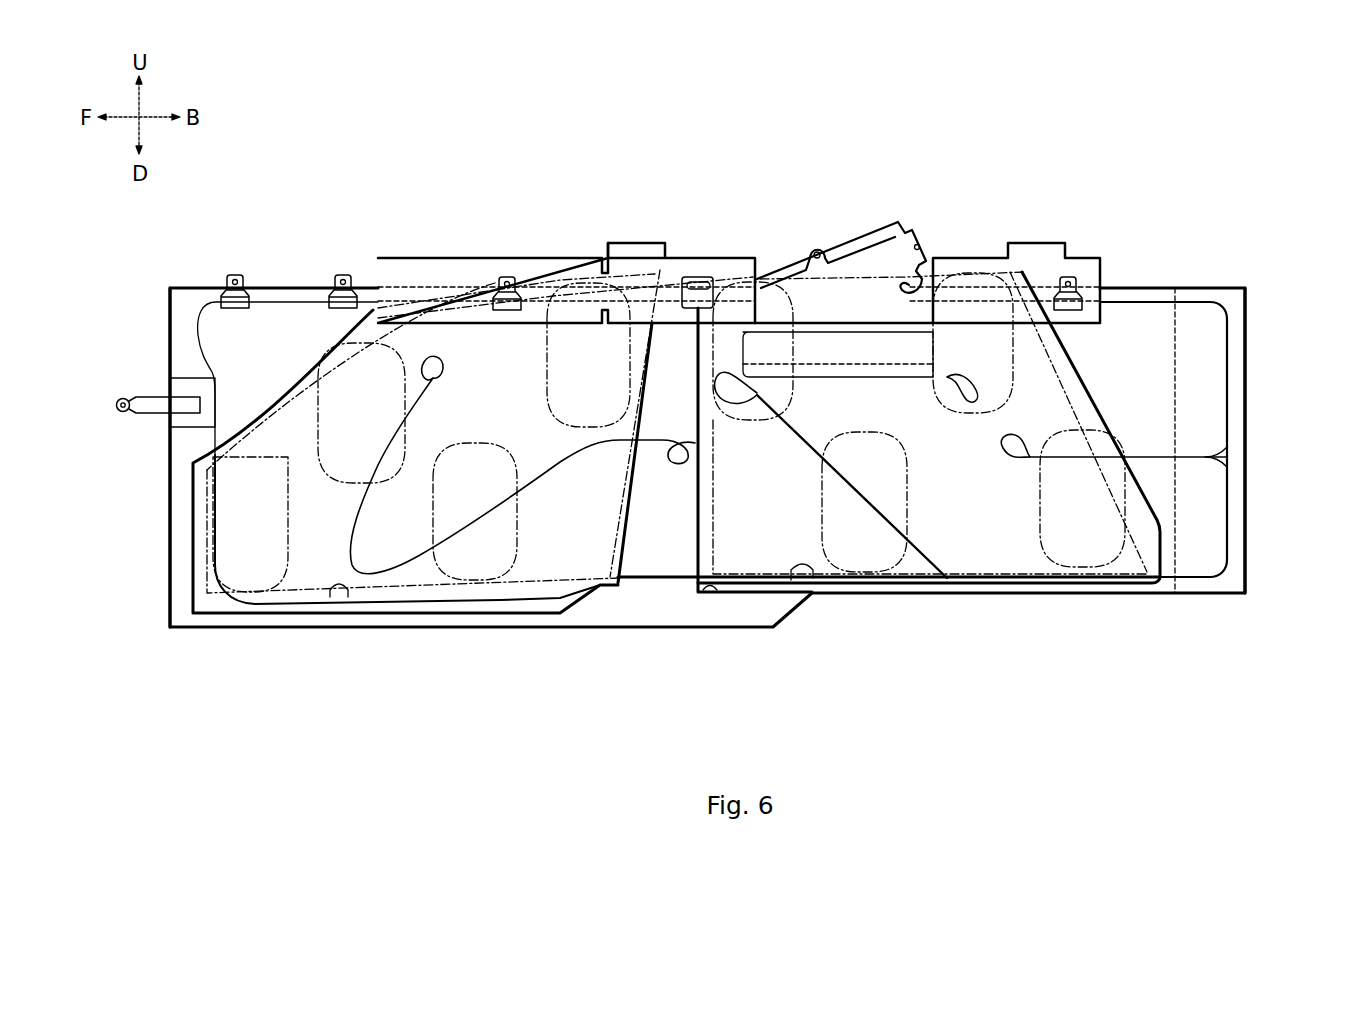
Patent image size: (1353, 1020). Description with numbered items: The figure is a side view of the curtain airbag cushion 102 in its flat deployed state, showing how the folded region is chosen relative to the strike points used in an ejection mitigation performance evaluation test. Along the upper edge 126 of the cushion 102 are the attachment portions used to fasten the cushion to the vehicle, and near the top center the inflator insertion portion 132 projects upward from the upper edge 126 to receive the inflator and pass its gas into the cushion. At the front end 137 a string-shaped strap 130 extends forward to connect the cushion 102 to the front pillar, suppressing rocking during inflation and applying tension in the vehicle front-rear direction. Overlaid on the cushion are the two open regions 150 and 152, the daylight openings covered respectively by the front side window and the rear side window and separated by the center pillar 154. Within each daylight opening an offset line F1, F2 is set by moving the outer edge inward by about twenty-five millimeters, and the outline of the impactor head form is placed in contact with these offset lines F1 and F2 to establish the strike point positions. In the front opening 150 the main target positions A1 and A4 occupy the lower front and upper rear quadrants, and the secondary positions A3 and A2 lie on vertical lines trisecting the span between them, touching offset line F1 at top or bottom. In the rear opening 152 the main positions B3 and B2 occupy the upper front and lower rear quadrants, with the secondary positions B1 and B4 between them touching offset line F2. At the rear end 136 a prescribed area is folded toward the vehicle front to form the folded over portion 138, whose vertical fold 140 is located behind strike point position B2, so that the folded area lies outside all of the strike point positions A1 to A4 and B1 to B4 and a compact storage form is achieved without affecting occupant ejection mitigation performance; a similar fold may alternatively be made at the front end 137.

The cushion 102 is at (310, 198).
The upper edge 126 is at (363, 287).
The strap 130 is at (160, 396).
The inflator insertion portion 132 is at (851, 238).
The rear end 136 is at (1246, 458).
The front end 137 is at (170, 517).
The folded over portion 138 is at (1243, 281).
The fold 140 is at (1177, 367).
The open region 150 is at (203, 617).
The open region 152 is at (703, 592).
The center pillar 154 is at (640, 563).
The offset line F1 is at (347, 597).
The offset line F2 is at (805, 596).
The strike point position A1 is at (250, 524).
The strike point position A2 is at (475, 511).
The strike point position A3 is at (361, 413).
The strike point position A4 is at (588, 355).
The strike point position B1 is at (864, 502).
The strike point position B2 is at (1082, 498).
The strike point position B3 is at (753, 351).
The strike point position B4 is at (973, 343).